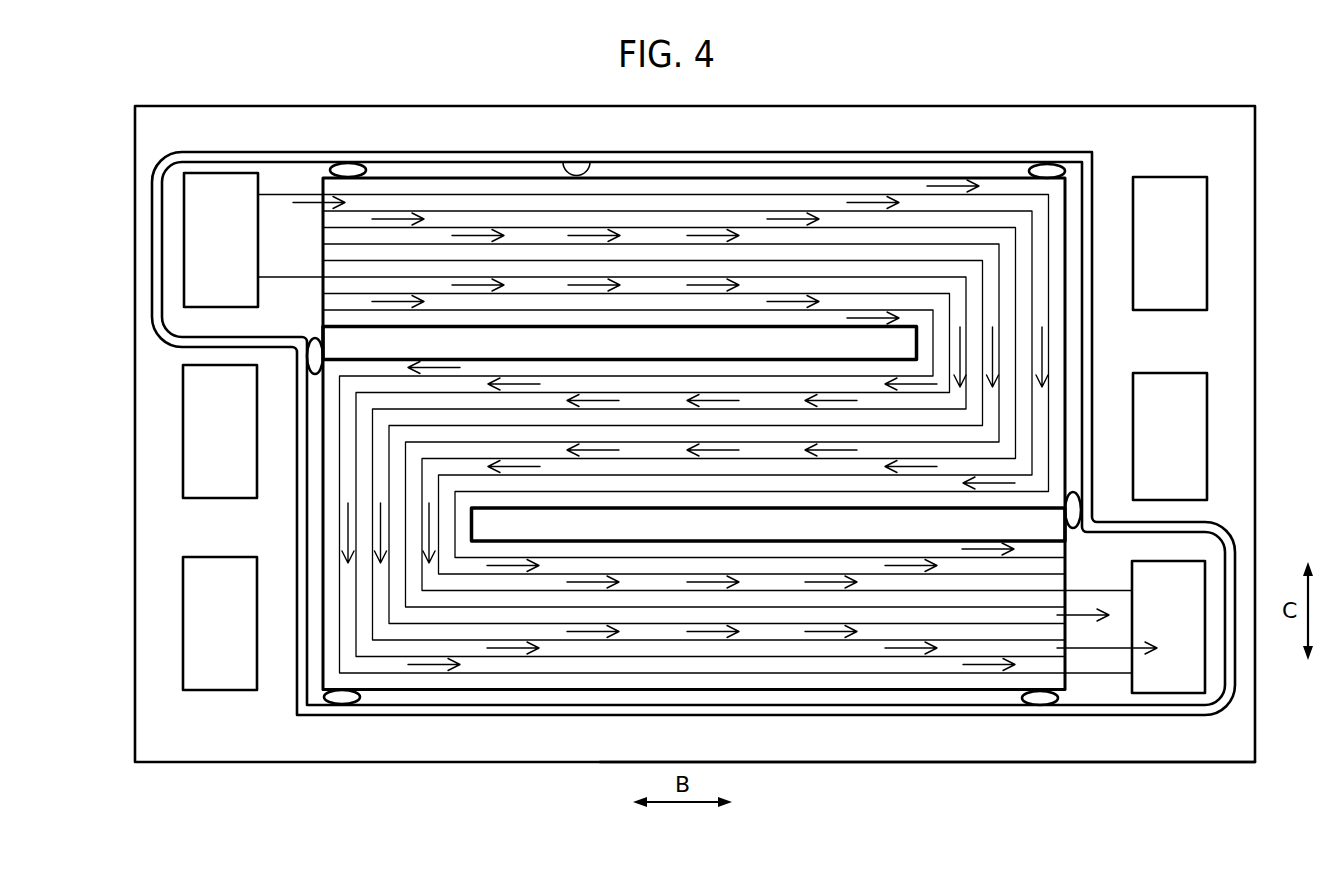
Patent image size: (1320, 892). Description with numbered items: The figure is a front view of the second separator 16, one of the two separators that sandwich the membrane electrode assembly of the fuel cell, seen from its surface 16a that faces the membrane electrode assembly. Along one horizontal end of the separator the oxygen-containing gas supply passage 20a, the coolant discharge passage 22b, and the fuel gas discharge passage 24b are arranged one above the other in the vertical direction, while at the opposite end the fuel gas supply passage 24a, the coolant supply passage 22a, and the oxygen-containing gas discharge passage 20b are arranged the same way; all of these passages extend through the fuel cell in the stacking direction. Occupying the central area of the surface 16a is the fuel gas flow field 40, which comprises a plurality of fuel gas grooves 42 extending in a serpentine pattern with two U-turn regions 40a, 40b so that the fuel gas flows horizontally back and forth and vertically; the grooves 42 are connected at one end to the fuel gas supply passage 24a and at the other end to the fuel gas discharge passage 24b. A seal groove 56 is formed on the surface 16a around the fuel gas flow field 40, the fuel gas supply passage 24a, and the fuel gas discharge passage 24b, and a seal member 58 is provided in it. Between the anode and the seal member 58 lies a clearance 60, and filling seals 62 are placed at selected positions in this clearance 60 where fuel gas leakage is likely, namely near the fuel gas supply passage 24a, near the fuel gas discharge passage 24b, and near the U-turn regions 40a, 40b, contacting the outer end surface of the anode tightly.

The second separator 16 is at (982, 87).
The surface of the second separator 16a is at (1003, 743).
The oxygen-containing gas supply passage 20a is at (1170, 243).
The oxygen-containing gas discharge passage 20b is at (220, 623).
The coolant supply passage 22a is at (220, 431).
The coolant discharge passage 22b is at (1170, 436).
The fuel gas supply passage 24a is at (253, 240).
The fuel gas discharge passage 24b is at (1135, 627).
The fuel gas flow field 40 is at (698, 402).
The U-turn region 40a is at (1030, 338).
The U-turn region 40b is at (360, 530).
The fuel gas grooves 42 is at (525, 220).
The seal groove 56 is at (590, 158).
The seal member 58 is at (1021, 143).
The clearance 60 is at (1070, 309).
The filling seals 62 is at (348, 163).